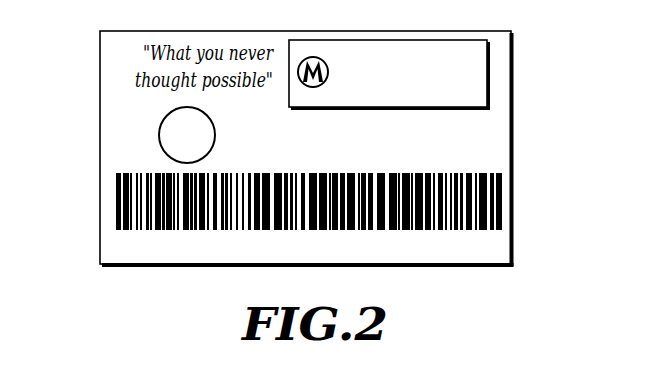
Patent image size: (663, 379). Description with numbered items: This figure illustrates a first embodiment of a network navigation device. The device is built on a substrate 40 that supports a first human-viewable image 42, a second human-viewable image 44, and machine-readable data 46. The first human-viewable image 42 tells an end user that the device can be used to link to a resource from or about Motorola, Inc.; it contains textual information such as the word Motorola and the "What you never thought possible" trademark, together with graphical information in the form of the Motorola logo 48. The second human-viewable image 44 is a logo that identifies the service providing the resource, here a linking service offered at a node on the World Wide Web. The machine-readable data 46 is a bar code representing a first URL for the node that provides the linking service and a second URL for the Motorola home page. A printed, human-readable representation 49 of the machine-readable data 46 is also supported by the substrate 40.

The substrate 40 is at (513, 78).
The first human-viewable image 42 is at (440, 104).
The second human-viewable image 44 is at (159, 134).
The machine-readable data 46 is at (502, 195).
The Motorola logo 48 is at (437, 110).
The human-readable representation 49 is at (445, 248).